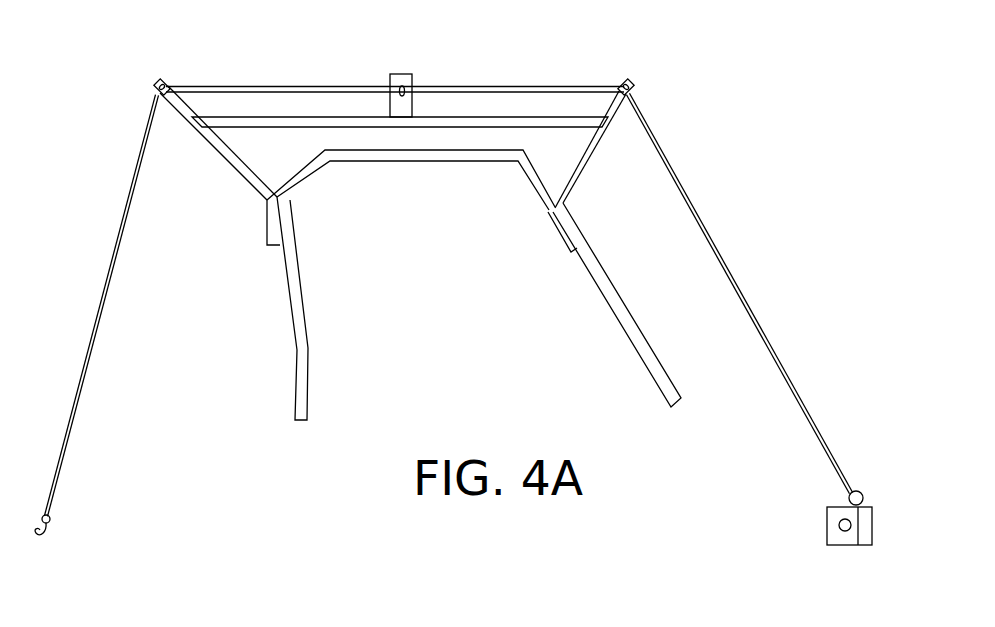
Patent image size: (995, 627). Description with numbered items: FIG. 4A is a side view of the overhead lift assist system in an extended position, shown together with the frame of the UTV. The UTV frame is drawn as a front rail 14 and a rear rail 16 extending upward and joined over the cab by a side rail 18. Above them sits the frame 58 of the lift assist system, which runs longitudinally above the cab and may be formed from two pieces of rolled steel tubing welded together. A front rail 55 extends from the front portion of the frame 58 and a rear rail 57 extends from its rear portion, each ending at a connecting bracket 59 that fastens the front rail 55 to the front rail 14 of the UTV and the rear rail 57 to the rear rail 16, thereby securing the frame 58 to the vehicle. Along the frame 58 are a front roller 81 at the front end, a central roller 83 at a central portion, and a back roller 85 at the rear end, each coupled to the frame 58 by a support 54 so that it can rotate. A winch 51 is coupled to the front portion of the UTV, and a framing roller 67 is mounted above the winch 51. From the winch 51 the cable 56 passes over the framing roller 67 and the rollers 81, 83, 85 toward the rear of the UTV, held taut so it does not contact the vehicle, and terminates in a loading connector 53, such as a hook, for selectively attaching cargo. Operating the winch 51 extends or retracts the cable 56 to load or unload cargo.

The front rail 14 is at (298, 353).
The rear rail 16 is at (622, 325).
The side rail 18 is at (420, 158).
The winch 51 is at (834, 536).
The loading connector 53 is at (50, 527).
The support 54 is at (192, 115).
The front rail 55 is at (225, 158).
The cable 56 is at (766, 328).
The rear rail 57 is at (588, 153).
The frame 58 is at (318, 122).
The connecting bracket 59 is at (270, 220).
The framing roller 67 is at (849, 494).
The front roller 81 is at (625, 81).
The central roller 83 is at (399, 77).
The back roller 85 is at (167, 82).